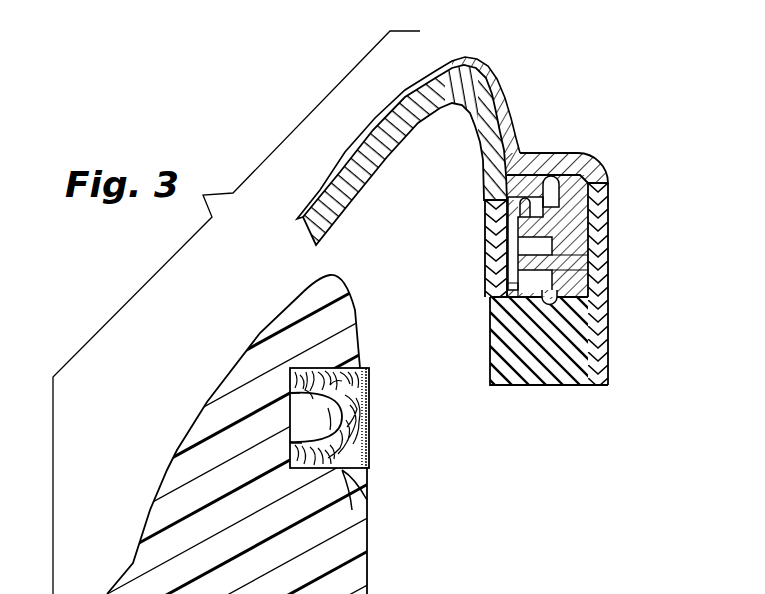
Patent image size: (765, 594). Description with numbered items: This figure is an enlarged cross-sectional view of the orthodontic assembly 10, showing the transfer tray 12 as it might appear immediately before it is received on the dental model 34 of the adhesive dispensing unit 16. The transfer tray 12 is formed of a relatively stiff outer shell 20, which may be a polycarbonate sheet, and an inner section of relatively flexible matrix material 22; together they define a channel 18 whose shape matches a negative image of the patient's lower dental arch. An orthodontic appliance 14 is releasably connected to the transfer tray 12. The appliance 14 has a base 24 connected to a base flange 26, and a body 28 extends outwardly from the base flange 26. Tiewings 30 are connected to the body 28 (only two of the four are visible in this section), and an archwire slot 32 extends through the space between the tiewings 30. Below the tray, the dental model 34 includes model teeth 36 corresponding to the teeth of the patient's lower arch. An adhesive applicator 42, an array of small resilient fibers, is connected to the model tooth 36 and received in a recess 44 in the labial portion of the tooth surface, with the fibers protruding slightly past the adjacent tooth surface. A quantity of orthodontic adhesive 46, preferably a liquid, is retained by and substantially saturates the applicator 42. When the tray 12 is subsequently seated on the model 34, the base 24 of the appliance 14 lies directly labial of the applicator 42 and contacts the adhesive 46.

The orthodontic assembly 10 is at (578, 80).
The transfer tray 12 is at (480, 63).
The orthodontic appliance 14 is at (536, 268).
The adhesive dispensing unit 16 is at (292, 425).
The channel 18 is at (415, 116).
The outer shell 20 is at (600, 343).
The matrix material 22 is at (567, 380).
The base 24 is at (484, 232).
The base flange 26 is at (510, 172).
The body 28 is at (510, 316).
The tiewings 30 is at (552, 190).
The archwire slot 32 is at (560, 254).
The dental model 34 is at (374, 565).
The model teeth 36 is at (265, 358).
The adhesive applicator 42 is at (370, 467).
The recess 44 is at (378, 500).
The orthodontic adhesive 46 is at (377, 415).